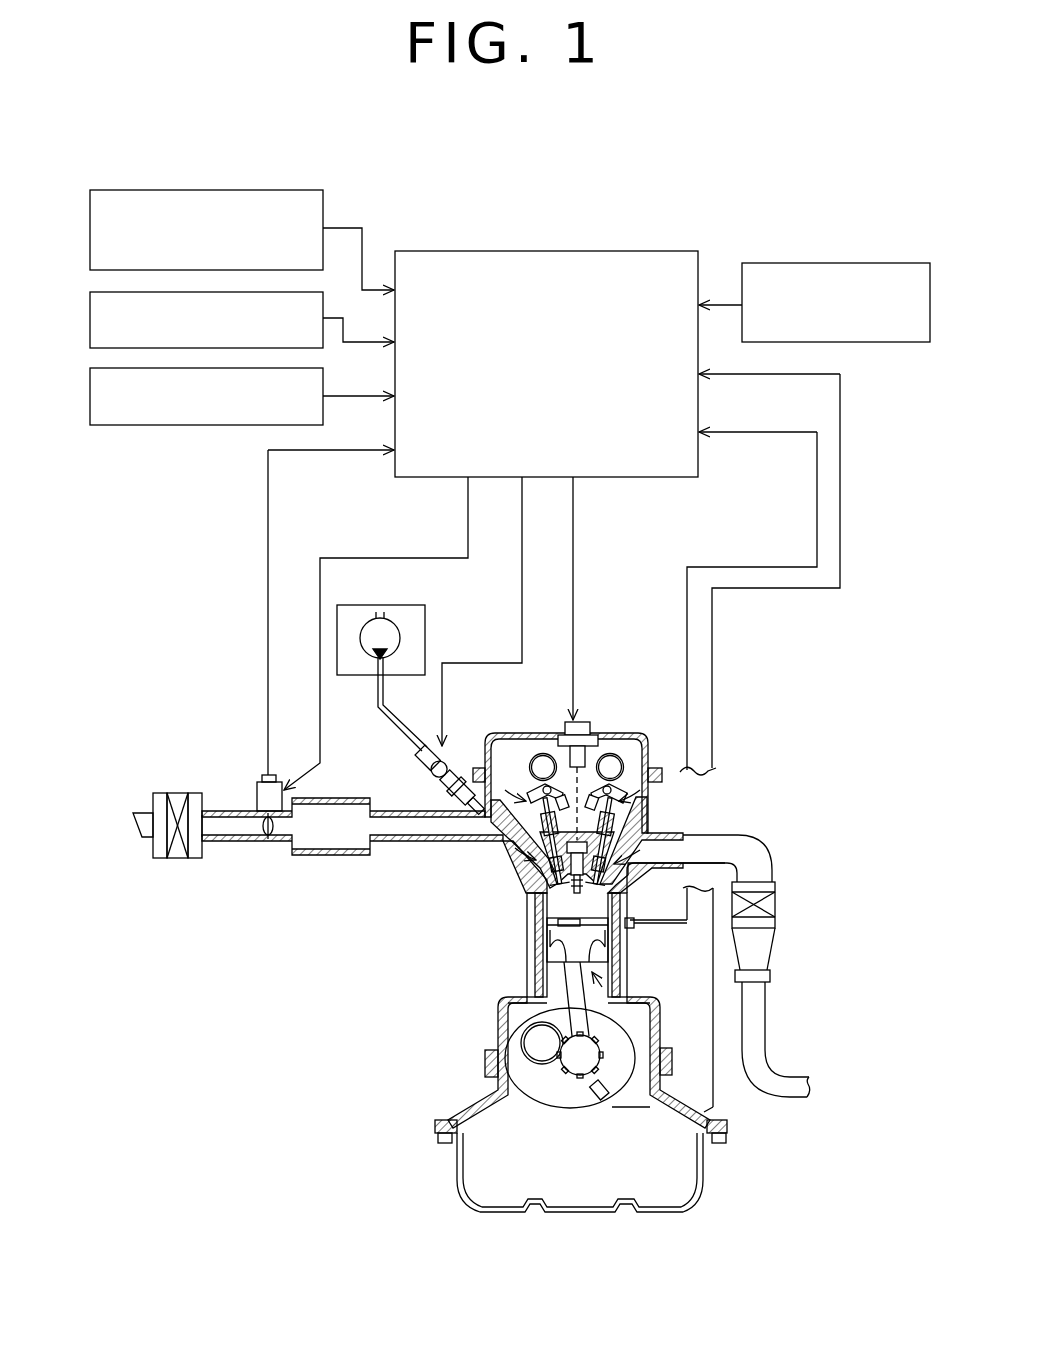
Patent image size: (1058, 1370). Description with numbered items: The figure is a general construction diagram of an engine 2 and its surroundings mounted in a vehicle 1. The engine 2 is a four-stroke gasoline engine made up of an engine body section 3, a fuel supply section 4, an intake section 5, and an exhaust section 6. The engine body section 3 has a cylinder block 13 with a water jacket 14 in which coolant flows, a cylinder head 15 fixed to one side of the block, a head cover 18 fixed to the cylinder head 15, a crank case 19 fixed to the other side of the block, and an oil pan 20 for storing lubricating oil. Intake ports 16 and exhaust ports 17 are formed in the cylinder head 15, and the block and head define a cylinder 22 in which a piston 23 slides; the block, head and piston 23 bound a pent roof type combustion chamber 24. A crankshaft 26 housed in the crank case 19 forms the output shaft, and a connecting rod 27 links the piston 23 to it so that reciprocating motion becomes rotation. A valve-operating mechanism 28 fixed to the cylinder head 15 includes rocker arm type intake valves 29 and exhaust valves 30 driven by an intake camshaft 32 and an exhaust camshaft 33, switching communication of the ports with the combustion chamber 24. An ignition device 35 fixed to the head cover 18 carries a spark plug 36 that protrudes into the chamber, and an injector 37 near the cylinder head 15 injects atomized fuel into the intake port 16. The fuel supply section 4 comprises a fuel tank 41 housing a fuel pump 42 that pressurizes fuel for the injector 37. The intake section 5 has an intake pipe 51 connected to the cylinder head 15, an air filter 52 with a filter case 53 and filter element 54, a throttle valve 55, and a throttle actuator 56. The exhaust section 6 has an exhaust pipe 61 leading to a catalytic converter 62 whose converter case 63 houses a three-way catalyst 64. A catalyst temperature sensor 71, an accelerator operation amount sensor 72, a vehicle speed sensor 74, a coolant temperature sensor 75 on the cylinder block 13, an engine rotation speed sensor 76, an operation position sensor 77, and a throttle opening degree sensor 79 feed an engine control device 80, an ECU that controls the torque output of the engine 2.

The vehicle 1 is at (632, 200).
The engine 2 is at (805, 692).
The engine body section 3 is at (440, 978).
The fuel supply section 4 is at (450, 638).
The intake section 5 is at (202, 662).
The exhaust section 6 is at (822, 841).
The cylinder block 13 is at (631, 902).
The water jacket 14 is at (629, 965).
The cylinder head 15 is at (526, 880).
The intake port 16 is at (512, 852).
The exhaust port 17 is at (653, 838).
The head cover 18 is at (496, 734).
The crank case 19 is at (498, 1040).
The oil pan 20 is at (703, 1162).
The cylinder 22 is at (628, 990).
The piston 23 is at (536, 966).
The combustion chamber 24 is at (548, 926).
The crankshaft 26 is at (566, 1062).
The connecting rod 27 is at (547, 1013).
The valve-operating mechanism 28 is at (640, 748).
The intake valve 29 is at (477, 758).
The exhaust valve 30 is at (653, 797).
The intake camshaft 32 is at (543, 753).
The exhaust camshaft 33 is at (612, 753).
The ignition device 35 is at (584, 722).
The spark plug 36 is at (546, 908).
The injector 37 is at (440, 778).
The fuel tank 41 is at (378, 605).
The fuel pump 42 is at (372, 660).
The intake pipe 51 is at (385, 846).
The air filter 52 is at (170, 779).
The filter case 53 is at (188, 801).
The filter element 54 is at (174, 797).
The throttle valve 55 is at (276, 827).
The throttle actuator 56 is at (286, 800).
The exhaust pipe 61 is at (768, 1058).
The catalytic converter 62 is at (807, 893).
The converter case 63 is at (776, 887).
The catalyst 64 is at (781, 907).
The catalyst temperature sensor 71 is at (842, 263).
The accelerator operation amount sensor 72 is at (232, 190).
The vehicle speed sensor 74 is at (325, 302).
The coolant temperature sensor 75 is at (634, 927).
The engine rotation speed sensor 76 is at (592, 1093).
The operation position sensor 77 is at (178, 428).
The throttle opening degree sensor 79 is at (274, 776).
The engine control device 80 is at (684, 252).